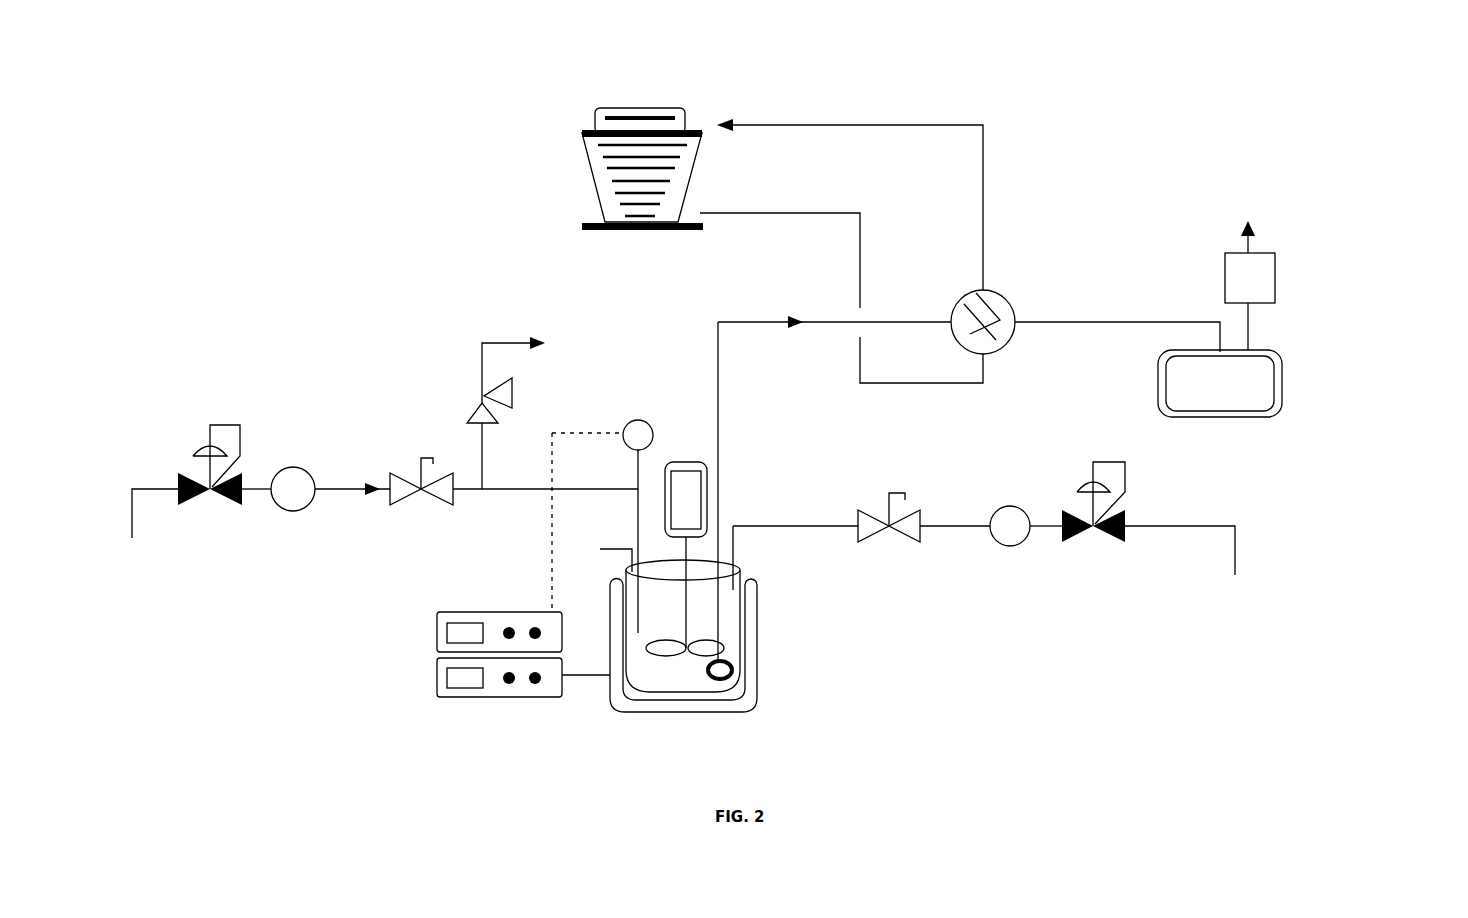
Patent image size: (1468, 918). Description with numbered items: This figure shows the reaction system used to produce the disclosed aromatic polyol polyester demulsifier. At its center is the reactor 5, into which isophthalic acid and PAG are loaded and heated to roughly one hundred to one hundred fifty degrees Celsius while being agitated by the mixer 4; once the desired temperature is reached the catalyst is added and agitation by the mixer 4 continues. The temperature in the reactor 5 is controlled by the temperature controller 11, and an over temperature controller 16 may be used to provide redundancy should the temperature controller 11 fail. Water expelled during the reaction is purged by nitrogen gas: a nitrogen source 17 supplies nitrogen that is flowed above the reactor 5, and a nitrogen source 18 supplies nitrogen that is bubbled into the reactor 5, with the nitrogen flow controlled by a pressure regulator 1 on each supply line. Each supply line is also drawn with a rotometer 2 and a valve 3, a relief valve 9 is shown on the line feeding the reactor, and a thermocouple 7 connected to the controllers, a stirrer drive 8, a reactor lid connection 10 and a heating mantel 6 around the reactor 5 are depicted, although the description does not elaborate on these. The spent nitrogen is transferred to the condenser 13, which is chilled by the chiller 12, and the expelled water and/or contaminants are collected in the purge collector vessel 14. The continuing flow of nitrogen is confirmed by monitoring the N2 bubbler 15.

The pressure regulator 1 is at (615, 473).
The rotometer 2 is at (637, 503).
The valve 3 is at (655, 487).
The mixer 4 is at (710, 670).
The reactor 5 is at (683, 533).
The heating mantel 6 is at (758, 646).
The thermocouple 7 is at (602, 513).
The stirrer motor 8 is at (685, 541).
The relief valve 9 is at (450, 407).
The reactor lid 10 is at (613, 549).
The temperature controller 11 is at (431, 677).
The chiller 12 is at (765, 245).
The condenser 13 is at (969, 299).
The purge collector vessel 14 is at (1296, 399).
The N2 bubbler 15 is at (1303, 285).
The over temperature controller 16 is at (407, 627).
The nitrogen source 17 is at (133, 542).
The nitrogen source 18 is at (1209, 579).